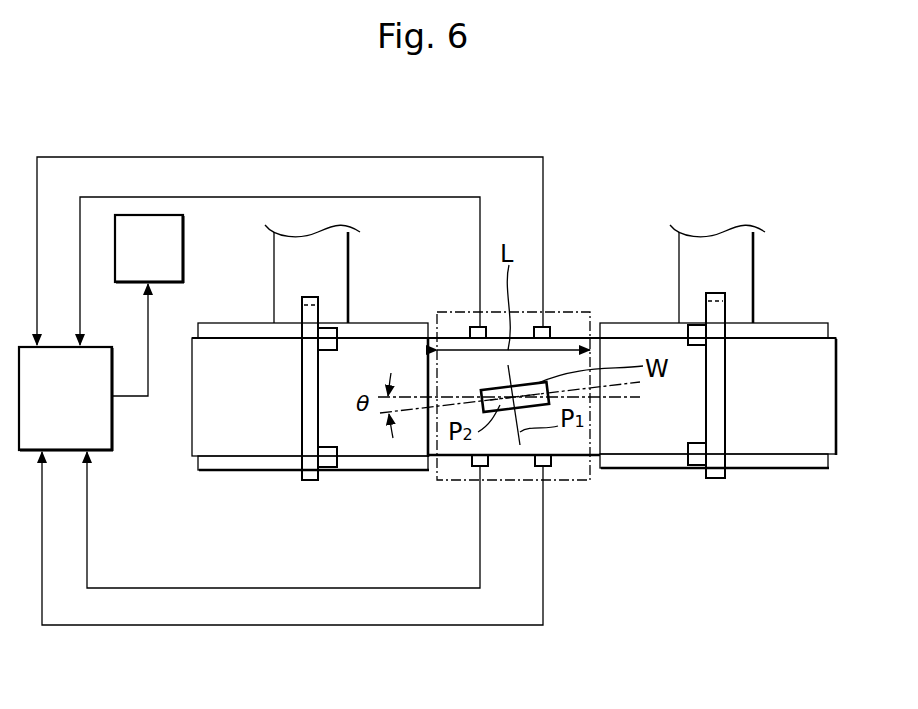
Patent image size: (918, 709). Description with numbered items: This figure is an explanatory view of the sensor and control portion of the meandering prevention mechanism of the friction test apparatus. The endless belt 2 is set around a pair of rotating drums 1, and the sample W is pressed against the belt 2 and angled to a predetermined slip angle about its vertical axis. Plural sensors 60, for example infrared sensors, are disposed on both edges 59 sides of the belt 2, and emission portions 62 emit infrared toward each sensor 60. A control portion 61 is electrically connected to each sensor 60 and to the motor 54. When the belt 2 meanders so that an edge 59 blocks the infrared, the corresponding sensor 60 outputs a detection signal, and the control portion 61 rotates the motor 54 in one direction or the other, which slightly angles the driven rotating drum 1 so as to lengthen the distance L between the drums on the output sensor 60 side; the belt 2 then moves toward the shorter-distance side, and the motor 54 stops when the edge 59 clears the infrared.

The rotating drum 1 is at (262, 476).
The endless belt 2 is at (653, 438).
The motor 54 is at (165, 262).
The edge of the belt 59 is at (388, 338).
The sensor 60 is at (475, 327).
The control portion 61 is at (82, 414).
The emission portion 62 is at (326, 339).